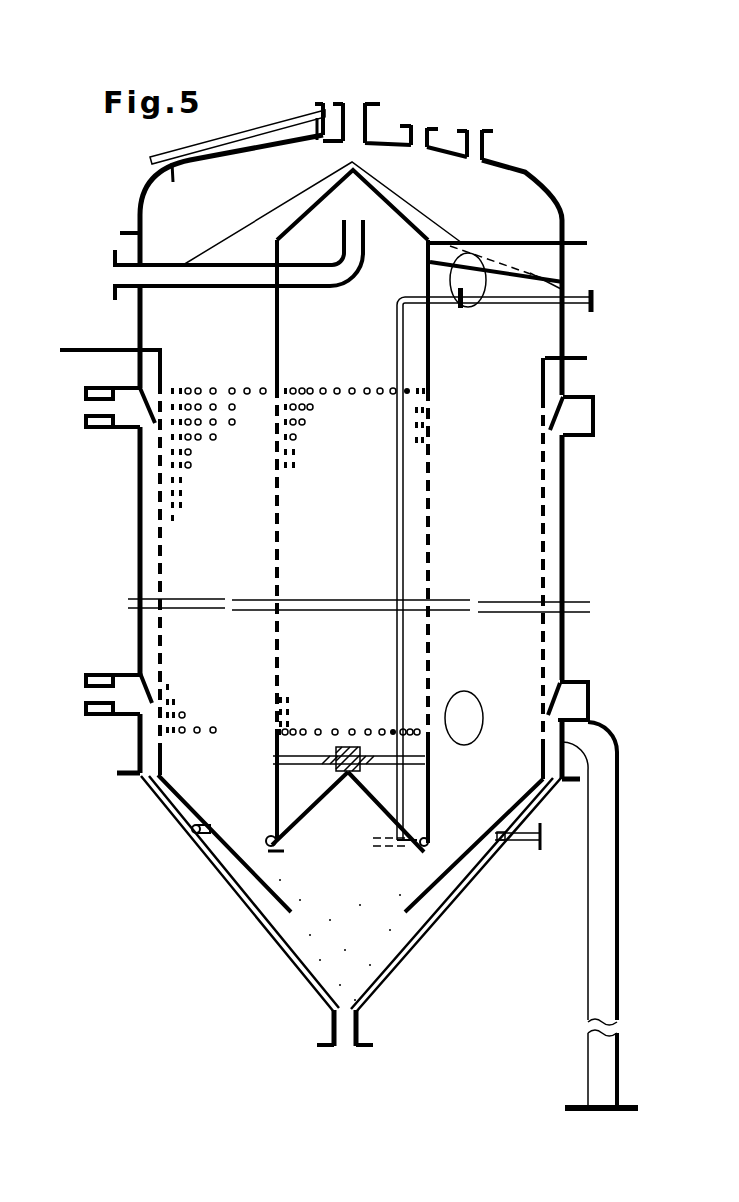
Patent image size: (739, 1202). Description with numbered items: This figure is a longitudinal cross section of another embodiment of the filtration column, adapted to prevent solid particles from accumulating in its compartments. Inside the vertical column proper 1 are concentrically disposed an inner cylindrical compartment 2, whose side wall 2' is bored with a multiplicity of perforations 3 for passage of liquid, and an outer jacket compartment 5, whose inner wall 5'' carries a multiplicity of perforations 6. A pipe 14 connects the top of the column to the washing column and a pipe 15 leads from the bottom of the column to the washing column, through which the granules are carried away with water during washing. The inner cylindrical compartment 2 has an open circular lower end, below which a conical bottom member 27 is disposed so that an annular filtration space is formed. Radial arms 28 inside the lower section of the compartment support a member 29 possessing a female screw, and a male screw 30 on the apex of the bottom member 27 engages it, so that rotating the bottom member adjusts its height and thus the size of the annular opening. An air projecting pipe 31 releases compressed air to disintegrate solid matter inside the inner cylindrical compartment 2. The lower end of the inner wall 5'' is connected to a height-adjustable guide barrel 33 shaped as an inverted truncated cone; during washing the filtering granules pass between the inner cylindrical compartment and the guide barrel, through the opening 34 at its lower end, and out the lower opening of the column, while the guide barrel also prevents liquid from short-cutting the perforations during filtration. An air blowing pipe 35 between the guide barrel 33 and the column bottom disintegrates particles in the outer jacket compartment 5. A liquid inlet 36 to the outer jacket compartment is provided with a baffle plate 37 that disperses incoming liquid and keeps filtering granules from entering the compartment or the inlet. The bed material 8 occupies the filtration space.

The vertical column proper 1 is at (565, 492).
The inner cylindrical compartment 2 is at (322, 358).
The side wall 2' is at (352, 541).
The perforations 3 is at (338, 389).
The outer jacket compartment 5 is at (356, 497).
The inner wall 5'' is at (351, 564).
The perforations 6 is at (213, 388).
The bulk material bed 8 is at (500, 348).
The pipe 14 is at (357, 104).
The pipe 15 is at (345, 1052).
The bottom member 27 is at (312, 816).
The radial arms 28 is at (300, 756).
The member possessing a female screw 29 is at (340, 748).
The male screw 30 is at (353, 775).
The air projecting pipe 31 is at (272, 852).
The guide barrel 33 is at (463, 864).
The opening 34 is at (376, 918).
The air blowing pipe 35 is at (193, 837).
The liquid inlet 36 is at (82, 403).
The baffle plate 37 is at (140, 405).